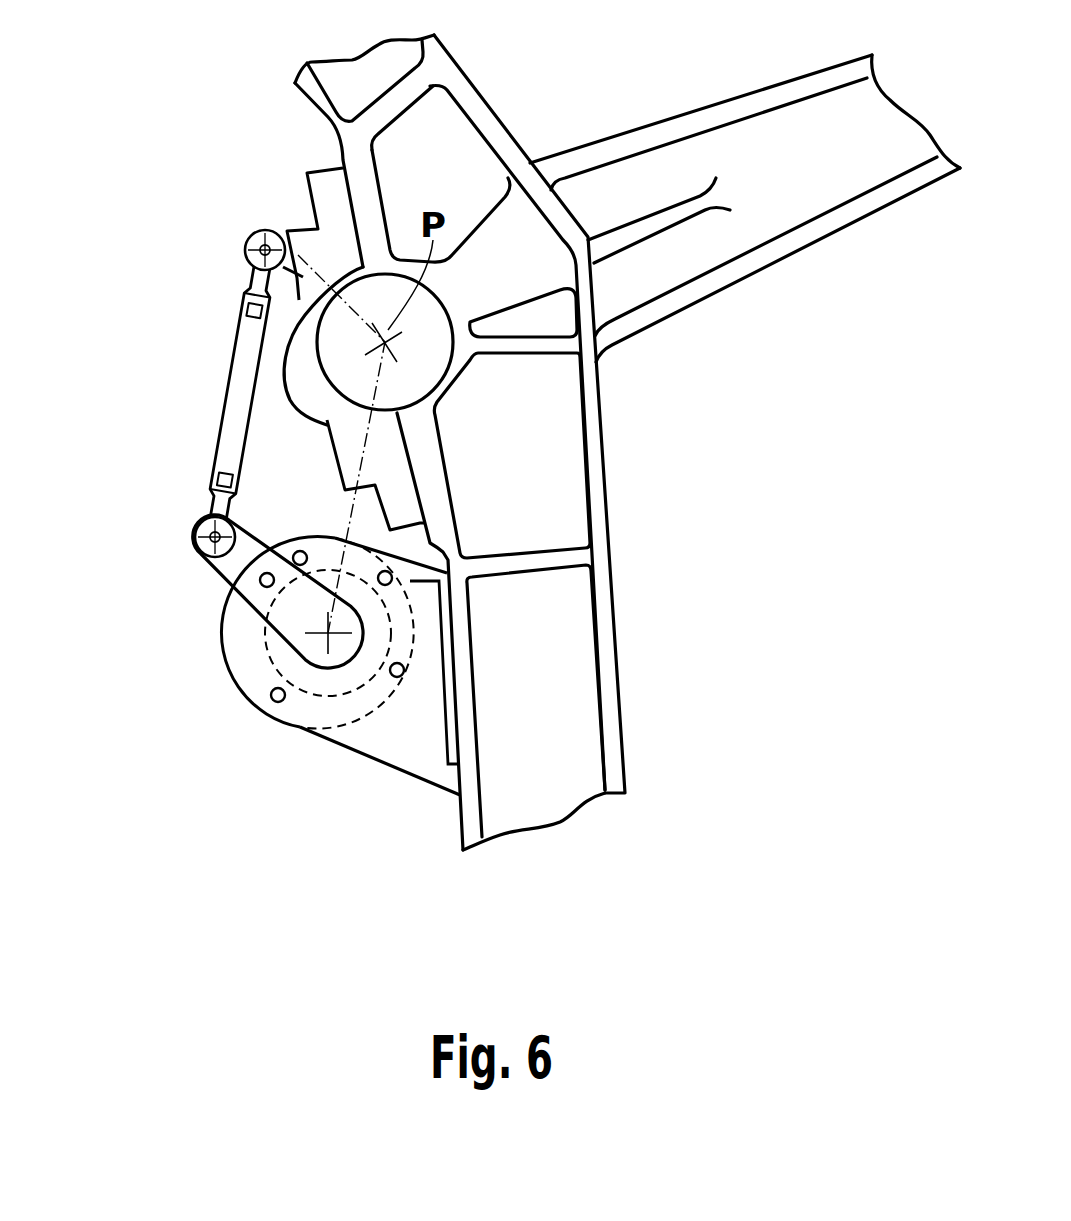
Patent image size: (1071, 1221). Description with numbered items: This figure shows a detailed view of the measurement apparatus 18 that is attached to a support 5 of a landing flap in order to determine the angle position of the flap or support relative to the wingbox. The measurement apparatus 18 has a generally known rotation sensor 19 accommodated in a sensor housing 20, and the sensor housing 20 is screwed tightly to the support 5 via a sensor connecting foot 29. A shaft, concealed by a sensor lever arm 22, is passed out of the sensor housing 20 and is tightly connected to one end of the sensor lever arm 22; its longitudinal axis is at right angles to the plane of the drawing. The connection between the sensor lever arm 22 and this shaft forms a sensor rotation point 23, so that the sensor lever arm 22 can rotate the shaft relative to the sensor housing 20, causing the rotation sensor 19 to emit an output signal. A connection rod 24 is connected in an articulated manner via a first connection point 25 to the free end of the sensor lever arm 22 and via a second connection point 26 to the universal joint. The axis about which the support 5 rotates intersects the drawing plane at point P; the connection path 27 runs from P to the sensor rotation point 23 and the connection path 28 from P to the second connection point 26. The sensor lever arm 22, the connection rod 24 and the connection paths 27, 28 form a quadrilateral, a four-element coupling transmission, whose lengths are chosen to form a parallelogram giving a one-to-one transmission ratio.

The support 5 is at (612, 716).
The measurement apparatus 18 is at (138, 347).
The rotation sensor 19 is at (250, 680).
The sensor housing 20 is at (387, 733).
The sensor lever arm 22 is at (238, 582).
The sensor rotation point 23 is at (337, 640).
The connection rod 24 is at (228, 433).
The first connection point 25 is at (198, 522).
The second connection point 26 is at (250, 240).
The connection path 27 is at (347, 513).
The connection path 28 is at (292, 212).
The sensor connecting foot 29 is at (450, 725).